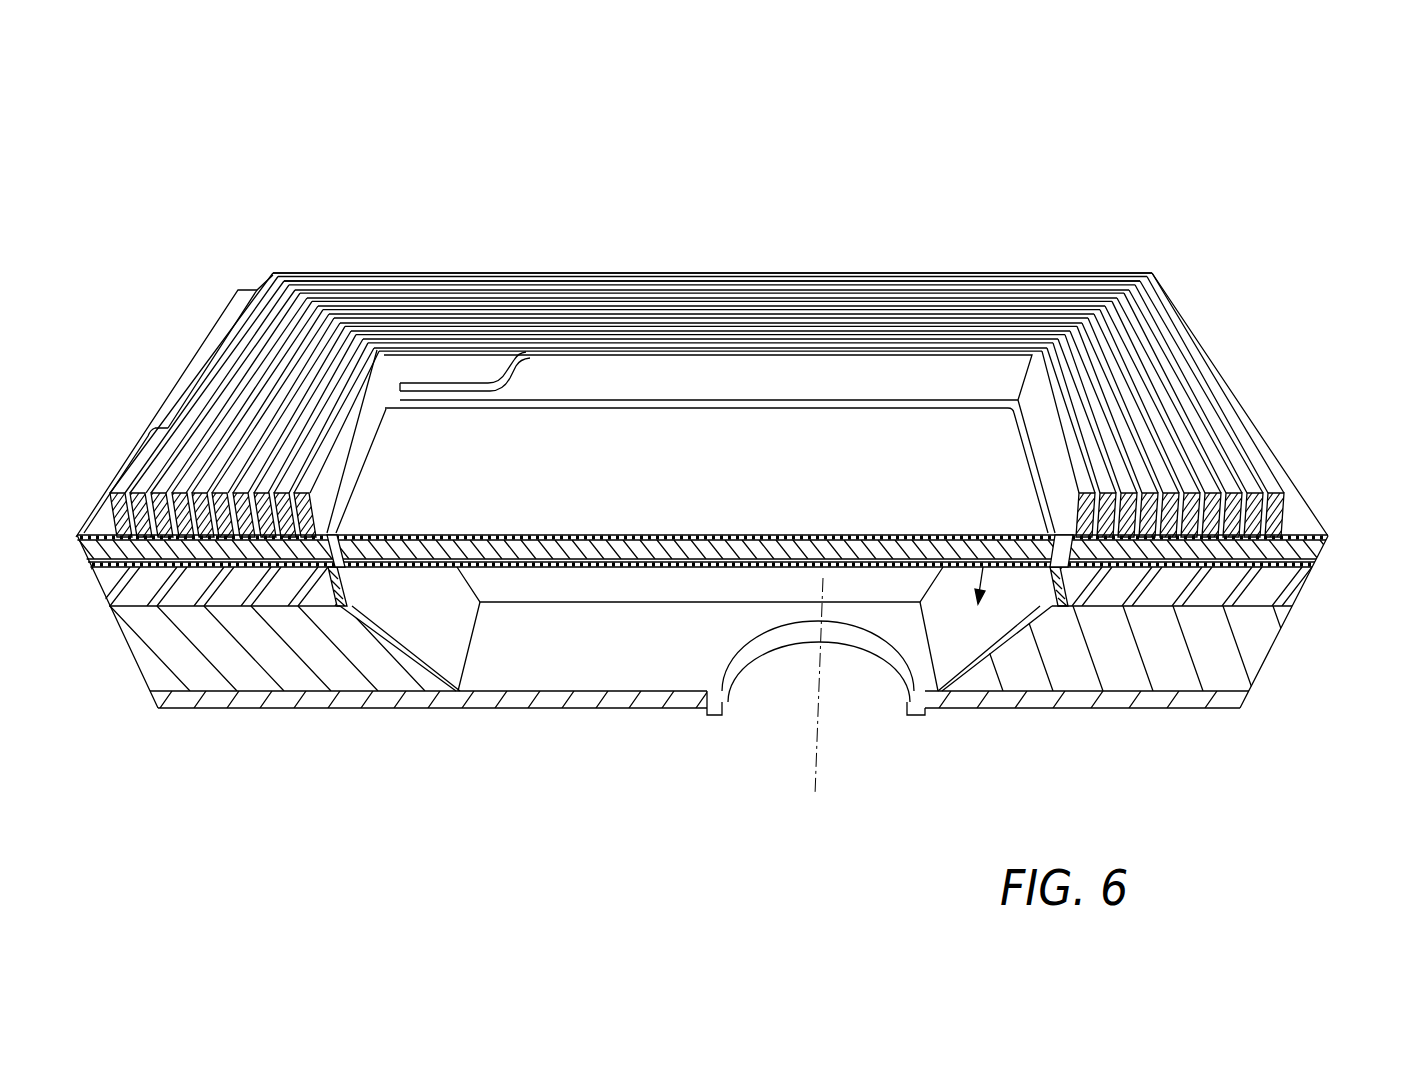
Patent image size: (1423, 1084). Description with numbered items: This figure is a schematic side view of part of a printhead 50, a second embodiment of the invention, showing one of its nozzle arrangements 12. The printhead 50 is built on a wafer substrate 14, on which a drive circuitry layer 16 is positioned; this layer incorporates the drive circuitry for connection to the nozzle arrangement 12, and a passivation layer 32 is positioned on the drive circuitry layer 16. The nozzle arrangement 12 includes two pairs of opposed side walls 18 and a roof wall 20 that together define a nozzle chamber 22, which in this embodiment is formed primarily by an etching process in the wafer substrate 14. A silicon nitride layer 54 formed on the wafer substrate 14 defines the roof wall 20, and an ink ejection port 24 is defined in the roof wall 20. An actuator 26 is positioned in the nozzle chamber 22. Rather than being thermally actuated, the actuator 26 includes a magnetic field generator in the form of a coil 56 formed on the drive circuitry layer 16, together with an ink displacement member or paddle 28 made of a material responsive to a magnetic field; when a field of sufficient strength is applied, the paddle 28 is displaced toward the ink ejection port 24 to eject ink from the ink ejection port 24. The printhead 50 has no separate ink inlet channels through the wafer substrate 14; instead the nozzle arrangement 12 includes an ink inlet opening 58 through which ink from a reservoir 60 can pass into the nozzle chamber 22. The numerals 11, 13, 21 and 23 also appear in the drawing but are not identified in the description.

The base body 11 is at (603, 650).
The nozzle arrangement 12 is at (1247, 393).
The bottom layer 13 is at (1185, 695).
The wafer substrate 14 is at (1247, 660).
The drive circuitry layer 16 is at (1292, 582).
The side walls 18 is at (537, 575).
The roof wall 20 is at (1298, 565).
The cavity ceiling 21 is at (640, 570).
The nozzle chamber 22 is at (1305, 548).
The top layer 23 is at (1300, 535).
The ink ejection port 24 is at (882, 272).
The actuator 26 is at (622, 465).
The paddle 28 is at (839, 470).
The passivation layer 32 is at (312, 707).
The printhead 50 is at (1021, 186).
The silicon nitride layer 54 is at (210, 700).
The coil 56 is at (291, 272).
The ink inlet opening 58 is at (447, 376).
The reservoir 60 is at (823, 191).